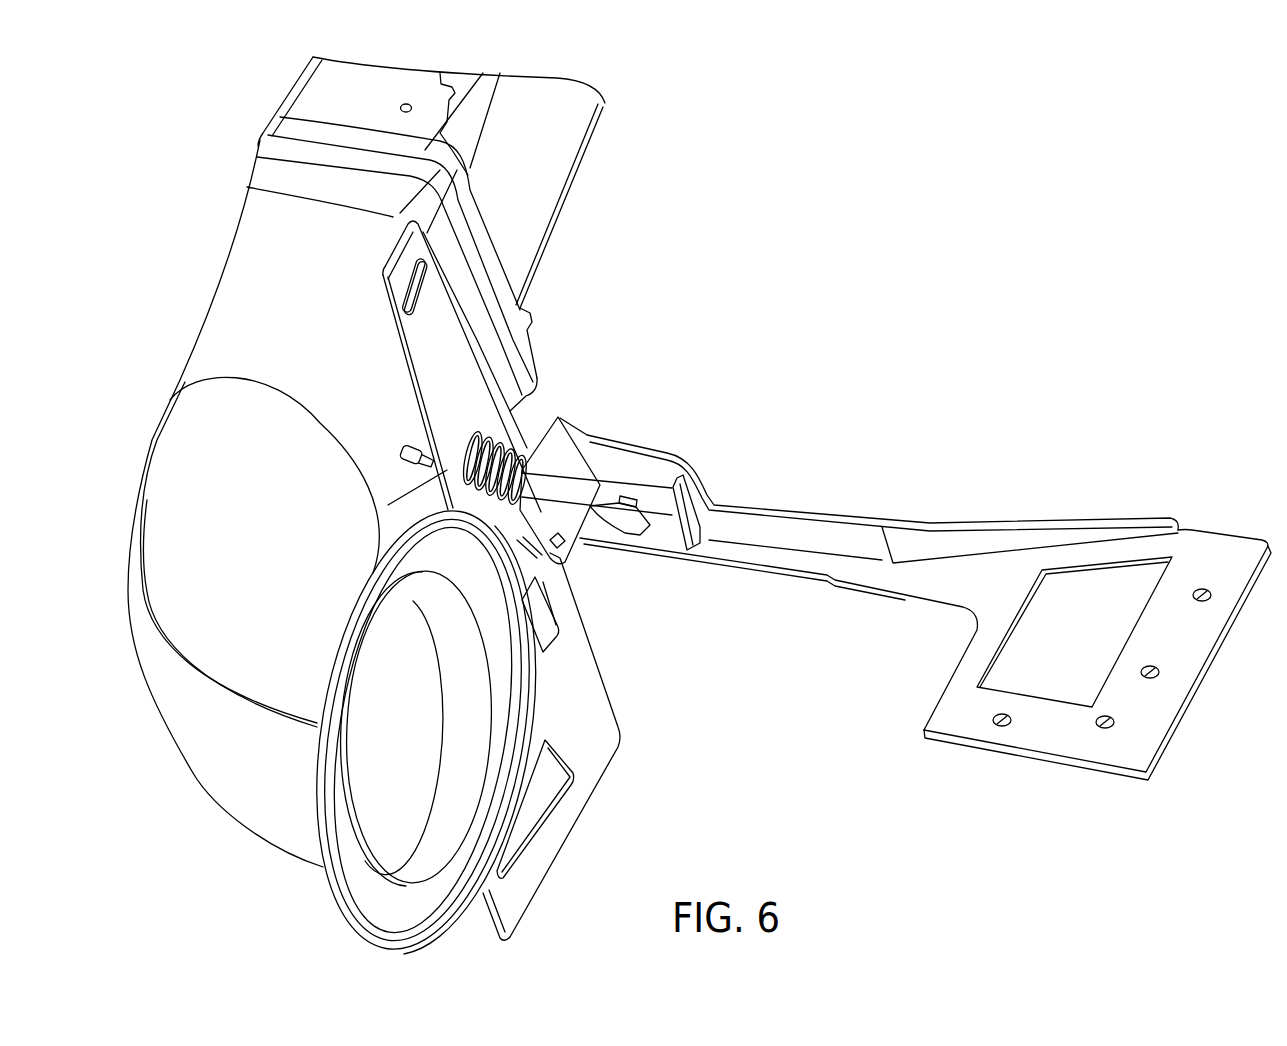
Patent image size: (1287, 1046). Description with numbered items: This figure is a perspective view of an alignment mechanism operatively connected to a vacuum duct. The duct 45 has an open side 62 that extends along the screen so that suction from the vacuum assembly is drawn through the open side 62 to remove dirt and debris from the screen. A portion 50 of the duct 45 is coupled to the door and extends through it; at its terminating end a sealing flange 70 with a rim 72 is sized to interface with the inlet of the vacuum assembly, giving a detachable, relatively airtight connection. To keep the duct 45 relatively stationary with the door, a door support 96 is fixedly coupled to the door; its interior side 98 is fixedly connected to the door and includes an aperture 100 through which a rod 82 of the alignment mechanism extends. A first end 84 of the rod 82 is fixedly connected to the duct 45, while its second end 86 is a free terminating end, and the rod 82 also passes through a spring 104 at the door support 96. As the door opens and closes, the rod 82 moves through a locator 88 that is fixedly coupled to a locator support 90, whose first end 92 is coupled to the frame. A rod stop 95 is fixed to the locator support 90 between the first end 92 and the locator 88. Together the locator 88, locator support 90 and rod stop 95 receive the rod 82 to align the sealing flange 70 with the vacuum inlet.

The duct 45 is at (205, 255).
The open side 62 is at (560, 155).
The door support 96 is at (415, 366).
The interior side 98 is at (462, 410).
The portion of the duct 50 is at (313, 888).
The sealing flange 70 is at (318, 803).
The rim 72 is at (385, 941).
The first end 84 is at (385, 455).
The aperture 100 is at (447, 478).
The spring 104 is at (535, 420).
The locator 88 is at (565, 452).
The rod 82 is at (655, 468).
The rod stop 95 is at (697, 530).
The second end 86 is at (677, 512).
The locator support 90 is at (900, 640).
The first end 92 is at (1213, 555).